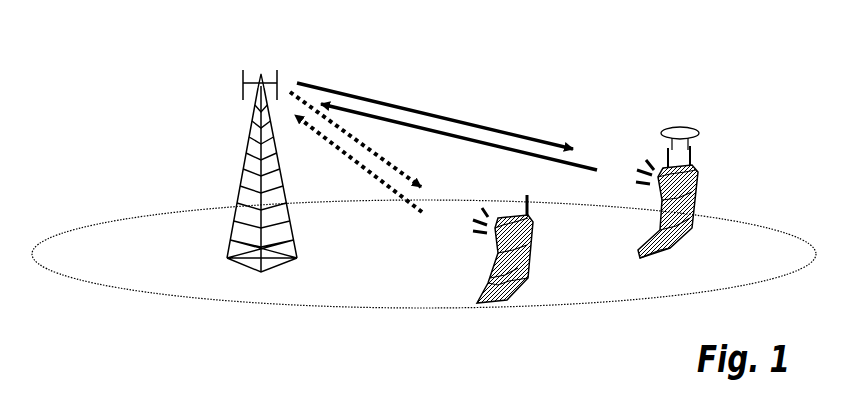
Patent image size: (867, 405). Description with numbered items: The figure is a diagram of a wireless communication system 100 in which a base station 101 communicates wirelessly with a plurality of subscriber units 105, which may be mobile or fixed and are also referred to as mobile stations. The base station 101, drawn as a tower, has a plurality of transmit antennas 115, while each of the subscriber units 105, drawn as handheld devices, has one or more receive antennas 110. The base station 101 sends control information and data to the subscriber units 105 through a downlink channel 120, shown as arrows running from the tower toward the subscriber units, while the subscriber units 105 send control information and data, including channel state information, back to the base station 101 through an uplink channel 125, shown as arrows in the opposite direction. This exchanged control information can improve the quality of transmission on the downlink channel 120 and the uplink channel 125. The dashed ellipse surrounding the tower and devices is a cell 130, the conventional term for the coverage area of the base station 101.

The wireless communication system 100 is at (117, 62).
The base station 101 is at (228, 248).
The subscriber units 105 is at (537, 230).
The receive antennas 110 is at (527, 196).
The transmit antennas 115 is at (243, 77).
The downlink channel 120 is at (441, 106).
The uplink channel 125 is at (350, 165).
The cell 130 is at (389, 303).